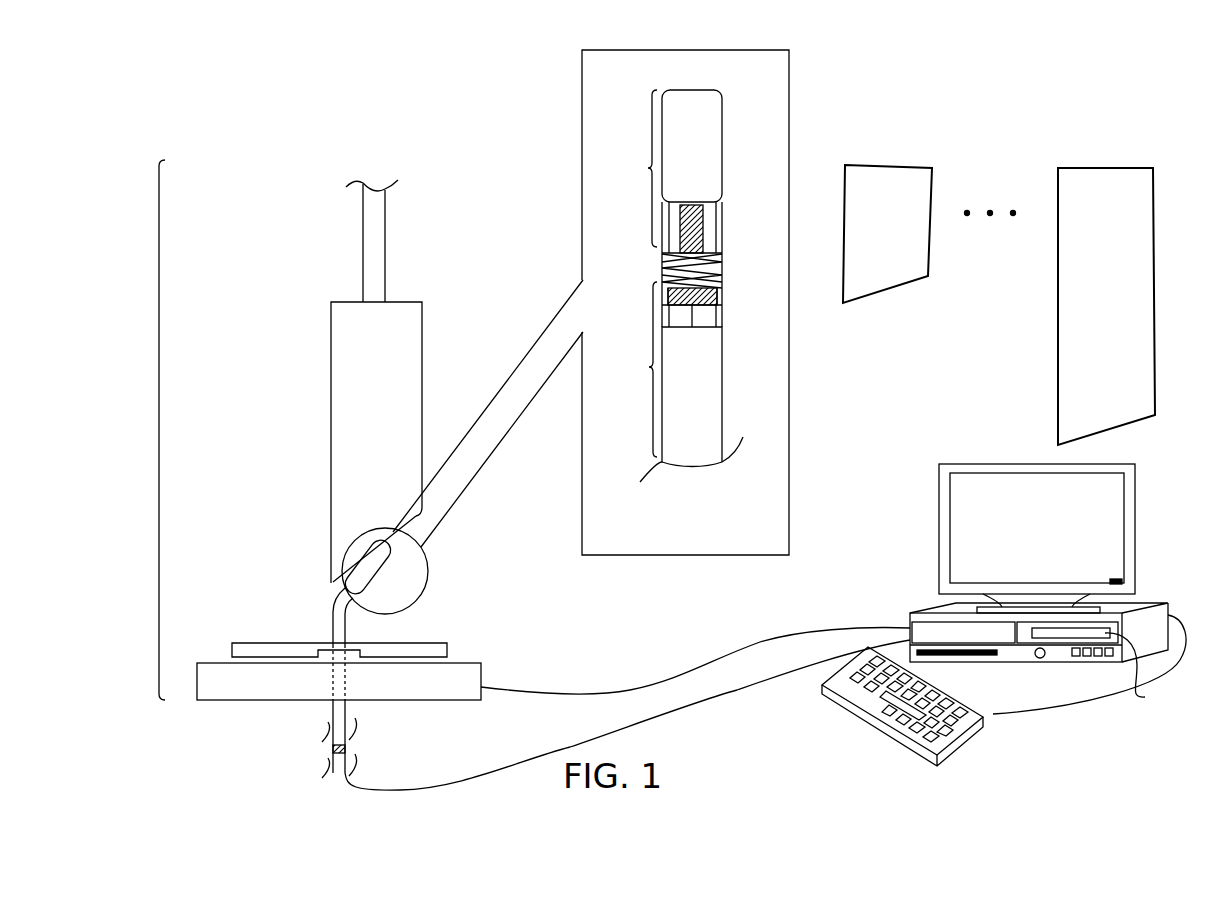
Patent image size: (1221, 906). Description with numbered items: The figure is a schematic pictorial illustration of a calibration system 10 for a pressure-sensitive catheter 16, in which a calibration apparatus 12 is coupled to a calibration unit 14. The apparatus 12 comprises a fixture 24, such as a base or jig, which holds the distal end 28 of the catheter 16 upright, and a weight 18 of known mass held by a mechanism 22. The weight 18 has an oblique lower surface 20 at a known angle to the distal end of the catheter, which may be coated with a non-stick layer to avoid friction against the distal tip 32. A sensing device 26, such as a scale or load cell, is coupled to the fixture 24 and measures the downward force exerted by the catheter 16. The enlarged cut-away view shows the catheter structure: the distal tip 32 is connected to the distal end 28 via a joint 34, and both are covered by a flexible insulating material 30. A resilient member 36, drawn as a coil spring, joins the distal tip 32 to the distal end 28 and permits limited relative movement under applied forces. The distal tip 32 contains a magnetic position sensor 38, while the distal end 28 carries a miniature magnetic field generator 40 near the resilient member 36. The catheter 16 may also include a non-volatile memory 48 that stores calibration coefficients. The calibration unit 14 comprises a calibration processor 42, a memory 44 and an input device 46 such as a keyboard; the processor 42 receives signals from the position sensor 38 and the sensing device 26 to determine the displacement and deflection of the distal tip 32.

The calibration system 10 is at (262, 148).
The calibration apparatus 12 is at (159, 424).
The calibration unit 14 is at (1158, 485).
The catheter 16 is at (345, 738).
The weight 18 is at (423, 357).
The oblique lower surface 20 is at (423, 516).
The mechanism 22 is at (363, 232).
The fixture 24 is at (447, 650).
The sensing device 26 is at (481, 675).
The distal end 28 is at (347, 617).
The flexible insulating material 30 is at (722, 140).
The distal tip 32 is at (418, 600).
The joint 34 is at (662, 270).
The resilient member 36 is at (722, 268).
The magnetic position sensor 38 is at (703, 213).
The magnetic field generator 40 is at (722, 300).
The calibration processor 42 is at (932, 632).
The memory 44 is at (1145, 697).
The input device 46 is at (963, 745).
The non-volatile memory 48 is at (333, 750).